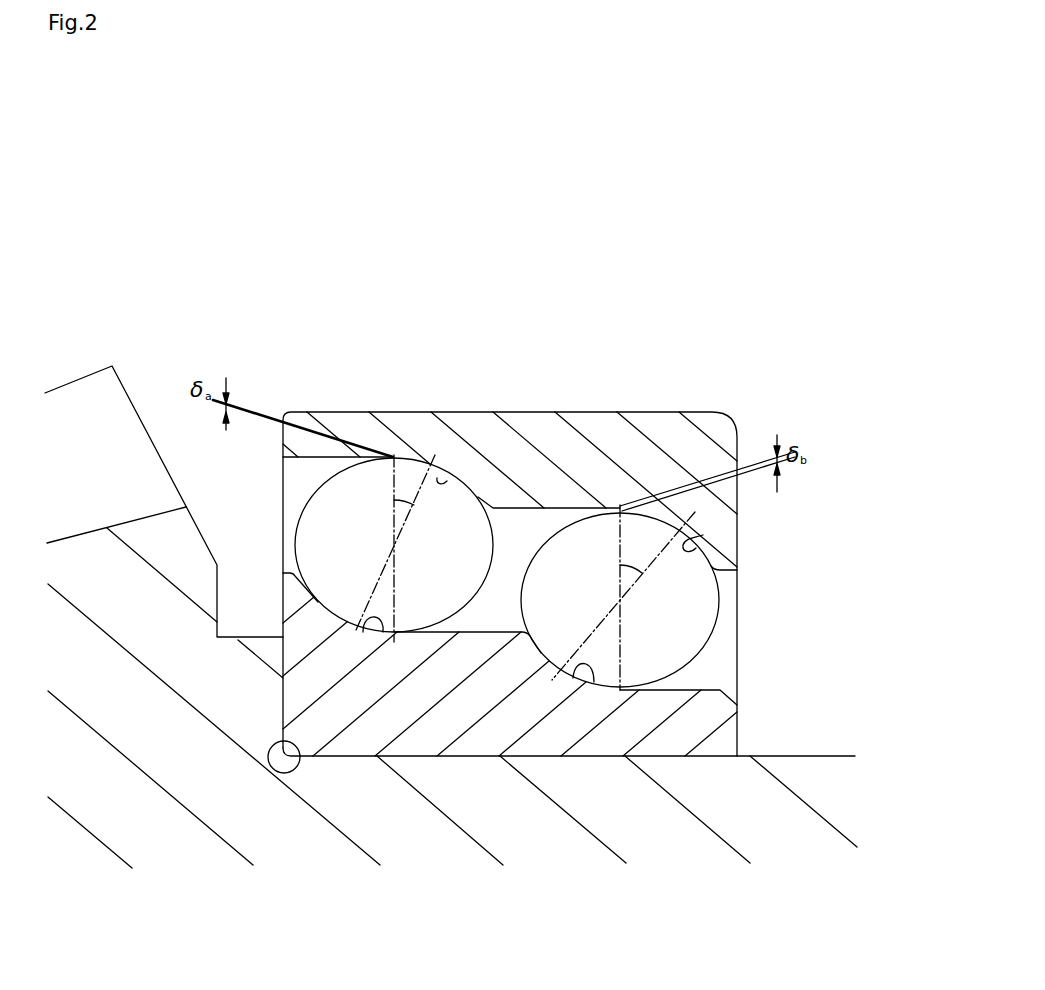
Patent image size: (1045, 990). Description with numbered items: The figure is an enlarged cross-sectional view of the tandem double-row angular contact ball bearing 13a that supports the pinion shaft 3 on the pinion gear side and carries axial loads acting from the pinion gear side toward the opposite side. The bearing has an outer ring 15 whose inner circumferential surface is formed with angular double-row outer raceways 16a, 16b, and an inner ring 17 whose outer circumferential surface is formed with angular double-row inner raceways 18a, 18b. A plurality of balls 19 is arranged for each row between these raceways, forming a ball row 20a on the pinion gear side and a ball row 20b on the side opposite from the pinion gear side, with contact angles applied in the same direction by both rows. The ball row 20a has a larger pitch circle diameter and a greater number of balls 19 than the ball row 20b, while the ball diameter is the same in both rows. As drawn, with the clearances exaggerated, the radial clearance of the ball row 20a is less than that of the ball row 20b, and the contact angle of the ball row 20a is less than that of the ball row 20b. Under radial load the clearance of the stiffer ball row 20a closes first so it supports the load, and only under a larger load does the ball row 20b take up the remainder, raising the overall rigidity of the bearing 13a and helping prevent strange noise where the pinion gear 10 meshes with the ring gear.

The pinion shaft 3 is at (770, 802).
The pinion gear 10 is at (78, 403).
The tandem double-row angular contact ball bearing 13a is at (734, 404).
The outer ring 15 is at (668, 428).
The outer raceway 16a is at (437, 478).
The outer raceway 16b is at (703, 535).
The inner ring 17 is at (665, 732).
The inner raceway 18a is at (378, 630).
The inner raceway 18b is at (588, 688).
The balls 19 is at (322, 533).
The ball row 20a is at (400, 478).
The ball row 20b is at (573, 548).